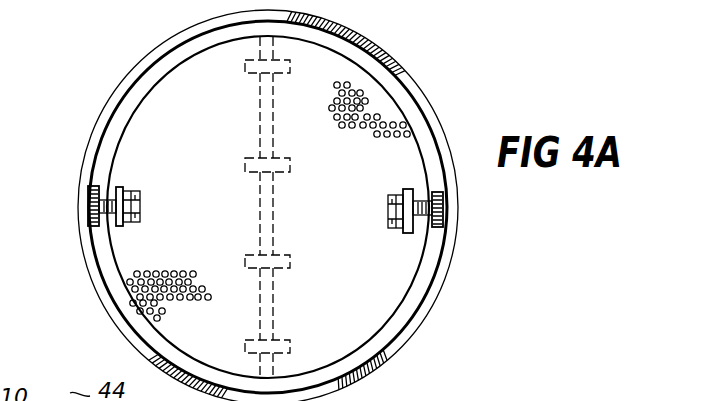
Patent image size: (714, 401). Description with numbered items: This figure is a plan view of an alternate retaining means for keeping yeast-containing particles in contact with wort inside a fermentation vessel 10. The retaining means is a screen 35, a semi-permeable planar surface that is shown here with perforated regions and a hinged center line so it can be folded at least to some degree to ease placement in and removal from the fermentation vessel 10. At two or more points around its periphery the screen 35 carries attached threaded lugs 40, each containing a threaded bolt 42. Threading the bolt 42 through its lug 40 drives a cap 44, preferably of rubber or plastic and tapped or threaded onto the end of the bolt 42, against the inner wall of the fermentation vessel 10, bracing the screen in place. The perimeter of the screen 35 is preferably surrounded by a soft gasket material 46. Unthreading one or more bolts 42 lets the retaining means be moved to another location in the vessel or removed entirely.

The fermentation vessel 10 is at (437, 274).
The screen 35 is at (365, 95).
The threaded lug 40 is at (88, 172).
The threaded bolt 42 is at (146, 190).
The cap 44 is at (87, 203).
The soft gasket material 46 is at (422, 137).